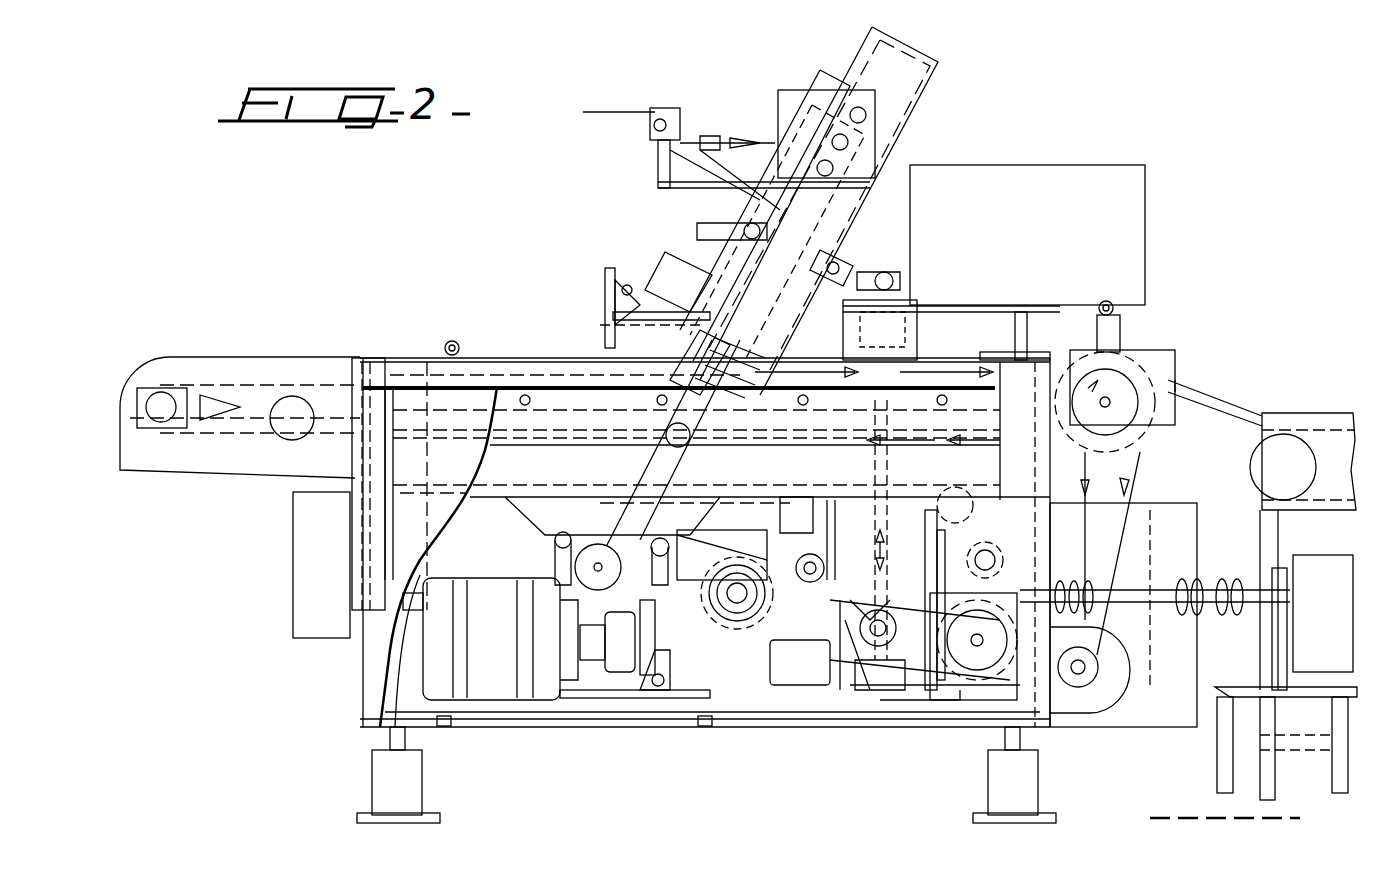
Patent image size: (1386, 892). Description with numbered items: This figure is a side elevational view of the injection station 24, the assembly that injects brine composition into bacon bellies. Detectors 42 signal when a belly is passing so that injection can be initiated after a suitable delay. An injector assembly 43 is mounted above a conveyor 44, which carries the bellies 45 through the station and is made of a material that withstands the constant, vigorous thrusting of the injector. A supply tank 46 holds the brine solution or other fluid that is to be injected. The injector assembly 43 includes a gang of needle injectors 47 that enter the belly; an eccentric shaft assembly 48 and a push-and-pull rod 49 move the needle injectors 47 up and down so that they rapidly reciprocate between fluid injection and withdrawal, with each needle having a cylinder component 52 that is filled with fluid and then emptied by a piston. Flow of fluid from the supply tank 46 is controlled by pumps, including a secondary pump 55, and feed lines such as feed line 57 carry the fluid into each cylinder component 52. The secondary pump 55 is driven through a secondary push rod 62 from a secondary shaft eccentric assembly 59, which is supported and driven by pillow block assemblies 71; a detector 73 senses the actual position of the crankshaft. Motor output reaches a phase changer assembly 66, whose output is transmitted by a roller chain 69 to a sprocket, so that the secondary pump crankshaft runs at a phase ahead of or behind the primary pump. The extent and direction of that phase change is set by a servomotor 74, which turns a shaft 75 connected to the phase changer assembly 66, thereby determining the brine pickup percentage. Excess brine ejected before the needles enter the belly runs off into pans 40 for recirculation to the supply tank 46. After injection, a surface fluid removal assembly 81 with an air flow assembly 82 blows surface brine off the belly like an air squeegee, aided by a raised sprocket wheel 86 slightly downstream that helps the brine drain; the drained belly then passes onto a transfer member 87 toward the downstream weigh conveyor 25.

The injection station 24 is at (265, 557).
The weigh conveyor 25 is at (1311, 400).
The pans 40 is at (1262, 535).
The detectors 42 is at (452, 340).
The injector assembly 43 is at (590, 222).
The conveyor 44 is at (288, 392).
The bellies 45 is at (935, 362).
The supply tank 46 is at (1036, 240).
The needle injectors 47 is at (602, 357).
The eccentric shaft assembly 48 is at (575, 522).
The rod 49 is at (652, 470).
The cylinder component 52 is at (755, 200).
The secondary pump 55 is at (892, 272).
The feed line 57 is at (860, 285).
The secondary shaft eccentric assembly 59 is at (850, 600).
The secondary push rod 62 is at (850, 505).
The phase changer assembly 66 is at (962, 655).
The roller chain 69 is at (882, 660).
The pillow block assemblies 71 is at (790, 664).
The detector 73 is at (885, 570).
The servomotor 74 is at (1334, 660).
The shaft 75 is at (1140, 612).
The surface fluid removal assembly 81 is at (1141, 331).
The air flow assembly 82 is at (1128, 298).
The sprocket wheel 86 is at (1140, 355).
The transfer member 87 is at (1222, 403).